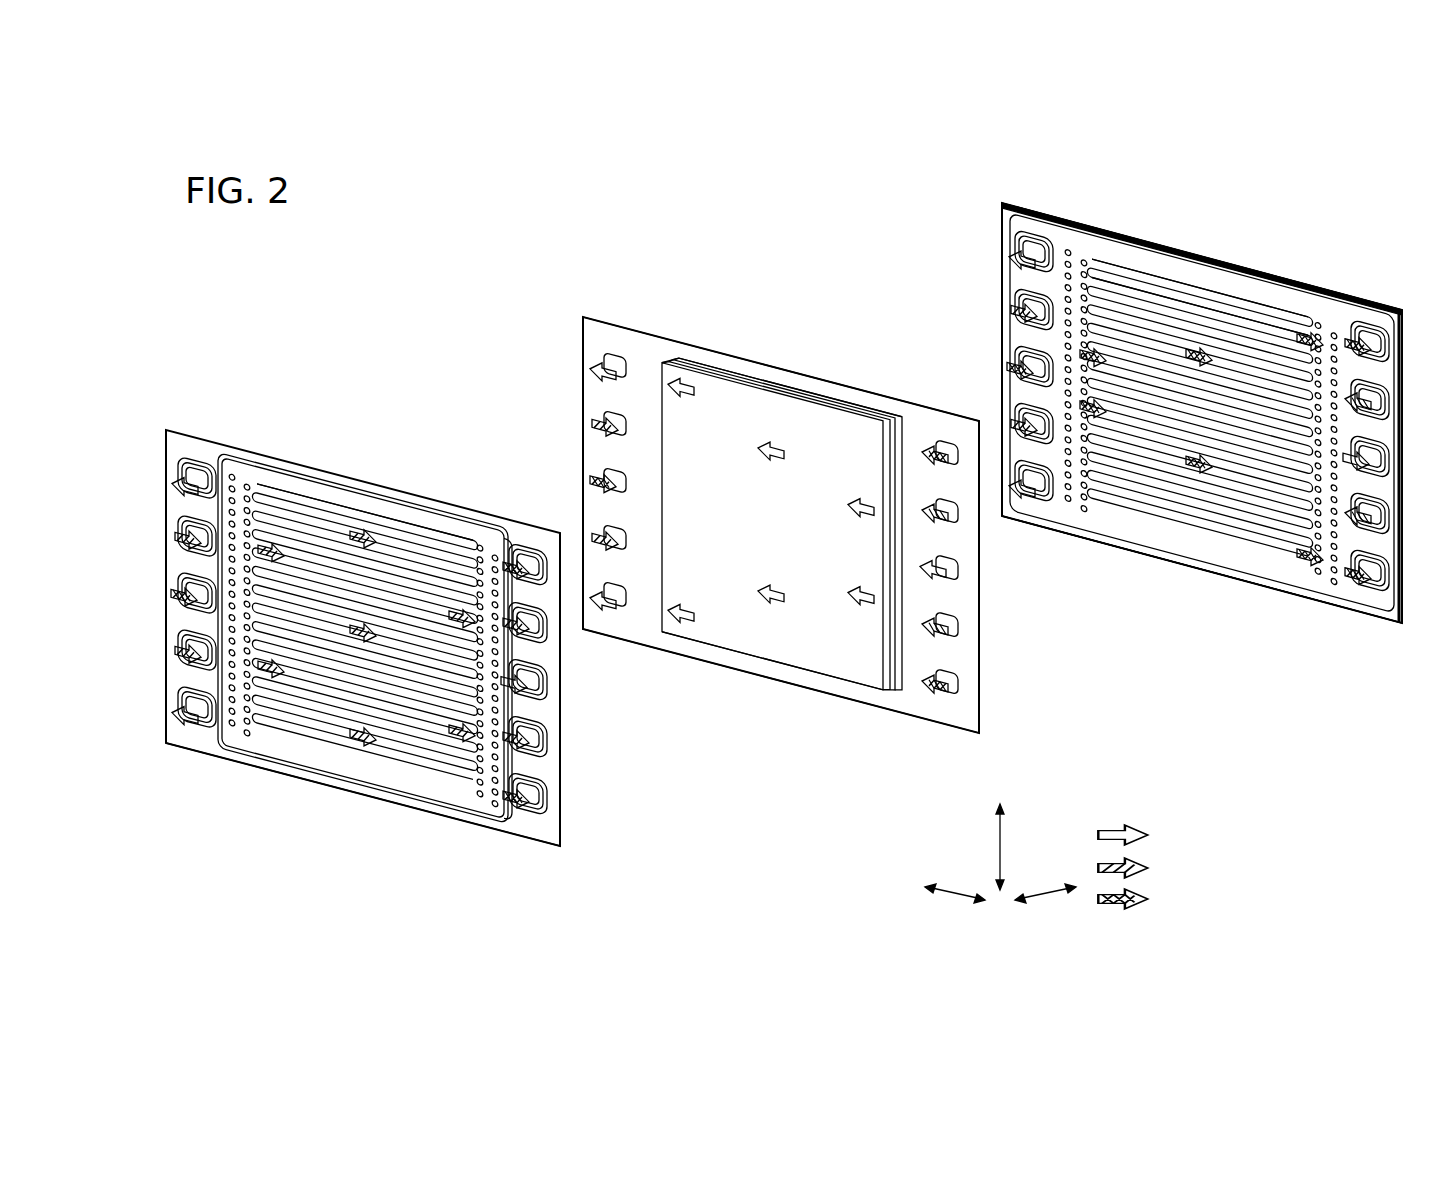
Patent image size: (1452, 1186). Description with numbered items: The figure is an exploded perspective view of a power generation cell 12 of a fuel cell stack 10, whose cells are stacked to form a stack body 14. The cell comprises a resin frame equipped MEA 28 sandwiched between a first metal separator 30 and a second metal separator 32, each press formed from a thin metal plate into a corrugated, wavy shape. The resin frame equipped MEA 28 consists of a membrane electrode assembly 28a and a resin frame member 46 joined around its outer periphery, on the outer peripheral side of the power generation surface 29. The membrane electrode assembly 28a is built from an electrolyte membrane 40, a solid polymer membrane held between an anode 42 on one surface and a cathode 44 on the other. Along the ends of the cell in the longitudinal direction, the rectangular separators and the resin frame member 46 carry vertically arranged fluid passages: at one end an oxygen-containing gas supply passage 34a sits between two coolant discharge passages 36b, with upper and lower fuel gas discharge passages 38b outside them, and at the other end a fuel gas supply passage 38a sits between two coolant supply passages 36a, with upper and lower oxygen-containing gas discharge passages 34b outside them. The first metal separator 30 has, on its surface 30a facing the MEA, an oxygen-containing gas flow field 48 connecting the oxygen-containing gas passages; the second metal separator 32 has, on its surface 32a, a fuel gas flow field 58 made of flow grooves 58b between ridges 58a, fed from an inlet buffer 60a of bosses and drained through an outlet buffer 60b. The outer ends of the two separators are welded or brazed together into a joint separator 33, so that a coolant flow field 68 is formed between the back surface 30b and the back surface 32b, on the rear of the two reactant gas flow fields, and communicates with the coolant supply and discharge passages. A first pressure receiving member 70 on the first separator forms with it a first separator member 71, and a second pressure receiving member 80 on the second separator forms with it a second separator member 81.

The fuel cell stack 10 is at (785, 535).
The stack body 14 is at (296, 259).
The power generation cell 12 is at (568, 298).
The resin frame equipped MEA 28 is at (643, 288).
The membrane electrode assembly 28a is at (703, 364).
The resin frame member 46 is at (648, 345).
The anode 42 is at (762, 378).
The cathode 44 is at (752, 662).
The electrolyte membrane 40 is at (800, 656).
The power generation surface 29 is at (841, 684).
The first metal separator 30 is at (172, 426).
The second metal separator 32 is at (1003, 222).
The joint separator 33 is at (940, 168).
The surface of first metal separator 30a is at (353, 762).
The back surface of first metal separator 30b is at (288, 756).
The surface of second metal separator 32a is at (1142, 550).
The back surface of second metal separator 32b is at (1216, 532).
The oxygen-containing gas supply passage 34a is at (548, 688).
The oxygen-containing gas discharge passages 34b is at (199, 462).
The coolant supply passages 36a is at (206, 528).
The coolant discharge passages 36b is at (538, 626).
The fuel gas supply passage 38a is at (236, 604).
The fuel gas discharge passages 38b is at (527, 560).
The oxygen-containing gas flow field 48 is at (340, 516).
The coolant flow field 68 is at (262, 508).
The first pressure receiving member 70 is at (548, 768).
The first separator member 71 is at (396, 478).
The fuel gas flow field 58 is at (1258, 202).
The ridges 58a is at (1162, 275).
The flow grooves 58b is at (1216, 297).
The inlet buffer 60a is at (1076, 246).
The outlet buffer 60b is at (1282, 304).
The second pressure receiving member 80 is at (1395, 632).
The second separator member 81 is at (1129, 238).